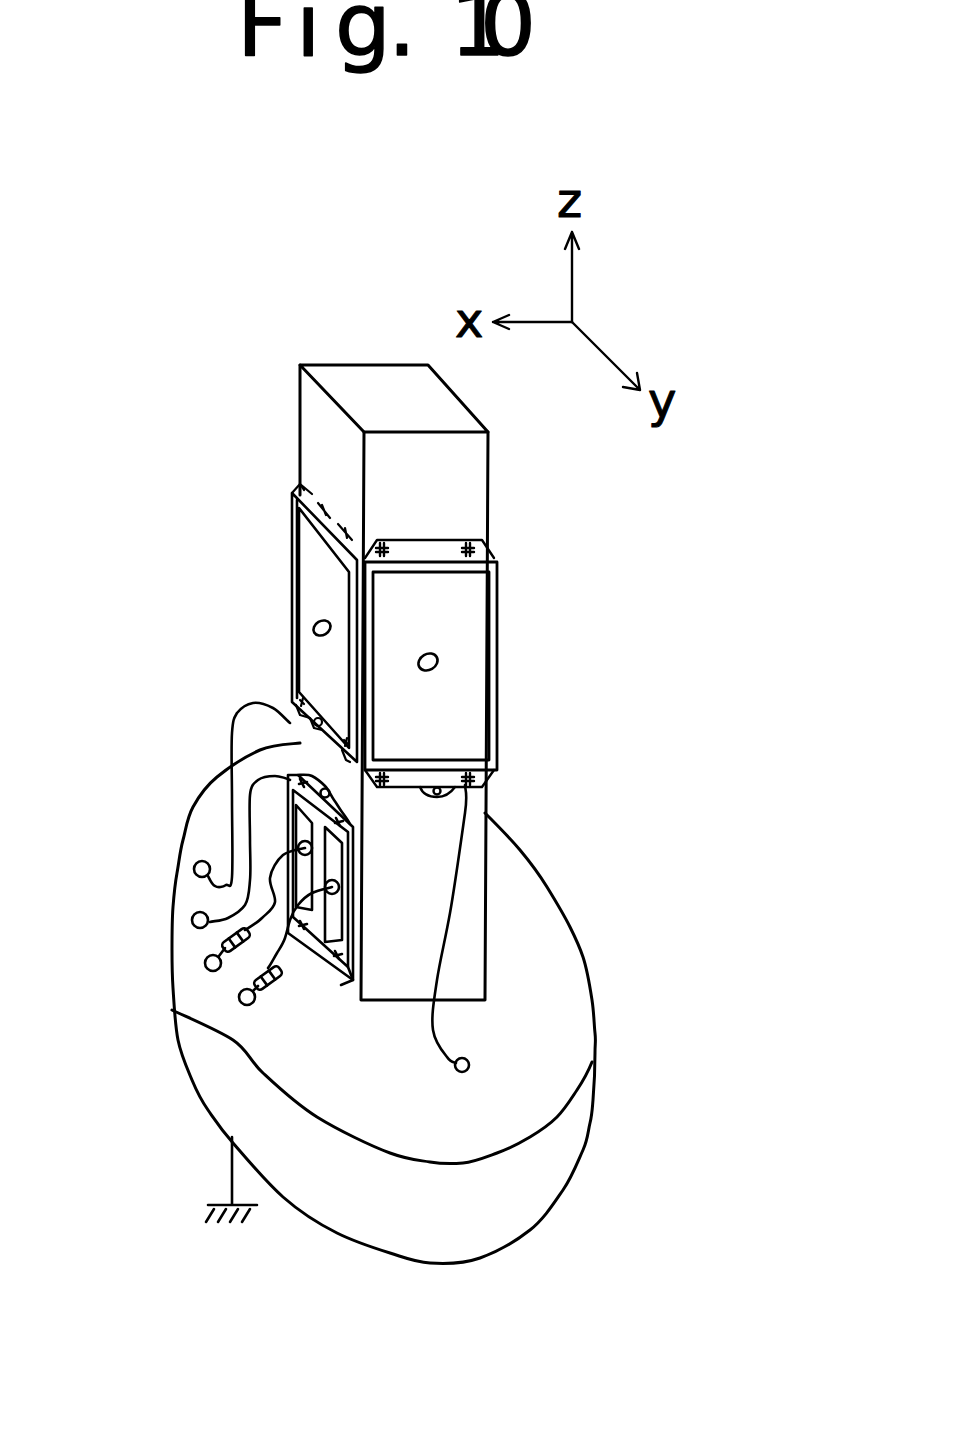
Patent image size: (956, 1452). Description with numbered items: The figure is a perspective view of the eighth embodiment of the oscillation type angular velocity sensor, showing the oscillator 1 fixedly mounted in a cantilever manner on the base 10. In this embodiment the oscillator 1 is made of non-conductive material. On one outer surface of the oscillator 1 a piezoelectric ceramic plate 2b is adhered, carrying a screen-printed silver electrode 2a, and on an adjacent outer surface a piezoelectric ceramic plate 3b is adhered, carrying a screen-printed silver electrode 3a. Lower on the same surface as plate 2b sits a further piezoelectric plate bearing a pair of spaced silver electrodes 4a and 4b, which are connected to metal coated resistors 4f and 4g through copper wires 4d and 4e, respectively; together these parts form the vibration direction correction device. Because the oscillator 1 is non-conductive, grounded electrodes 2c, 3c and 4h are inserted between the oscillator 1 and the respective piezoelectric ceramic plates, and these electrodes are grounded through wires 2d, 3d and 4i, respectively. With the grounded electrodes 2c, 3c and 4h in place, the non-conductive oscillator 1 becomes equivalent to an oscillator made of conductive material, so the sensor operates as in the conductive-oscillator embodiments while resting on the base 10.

The oscillator 1 is at (298, 407).
The silver electrode 2a is at (313, 598).
The piezoelectric ceramic plate 2b is at (297, 542).
The grounded electrode 2c is at (300, 484).
The wire 2d is at (233, 717).
The silver electrode 3a is at (470, 682).
The piezoelectric ceramic plate 3b is at (498, 603).
The grounded electrode 3c is at (490, 540).
The wire 3d is at (447, 940).
The silver electrode 4a is at (290, 793).
The silver electrode 4b is at (342, 858).
The copper wire 4d is at (293, 862).
The copper wire 4e is at (341, 982).
The metal coated resistor 4f is at (200, 935).
The metal coated resistor 4g is at (295, 960).
The grounded electrode 4h is at (253, 1112).
The wire 4i is at (283, 852).
The base 10 is at (597, 1090).